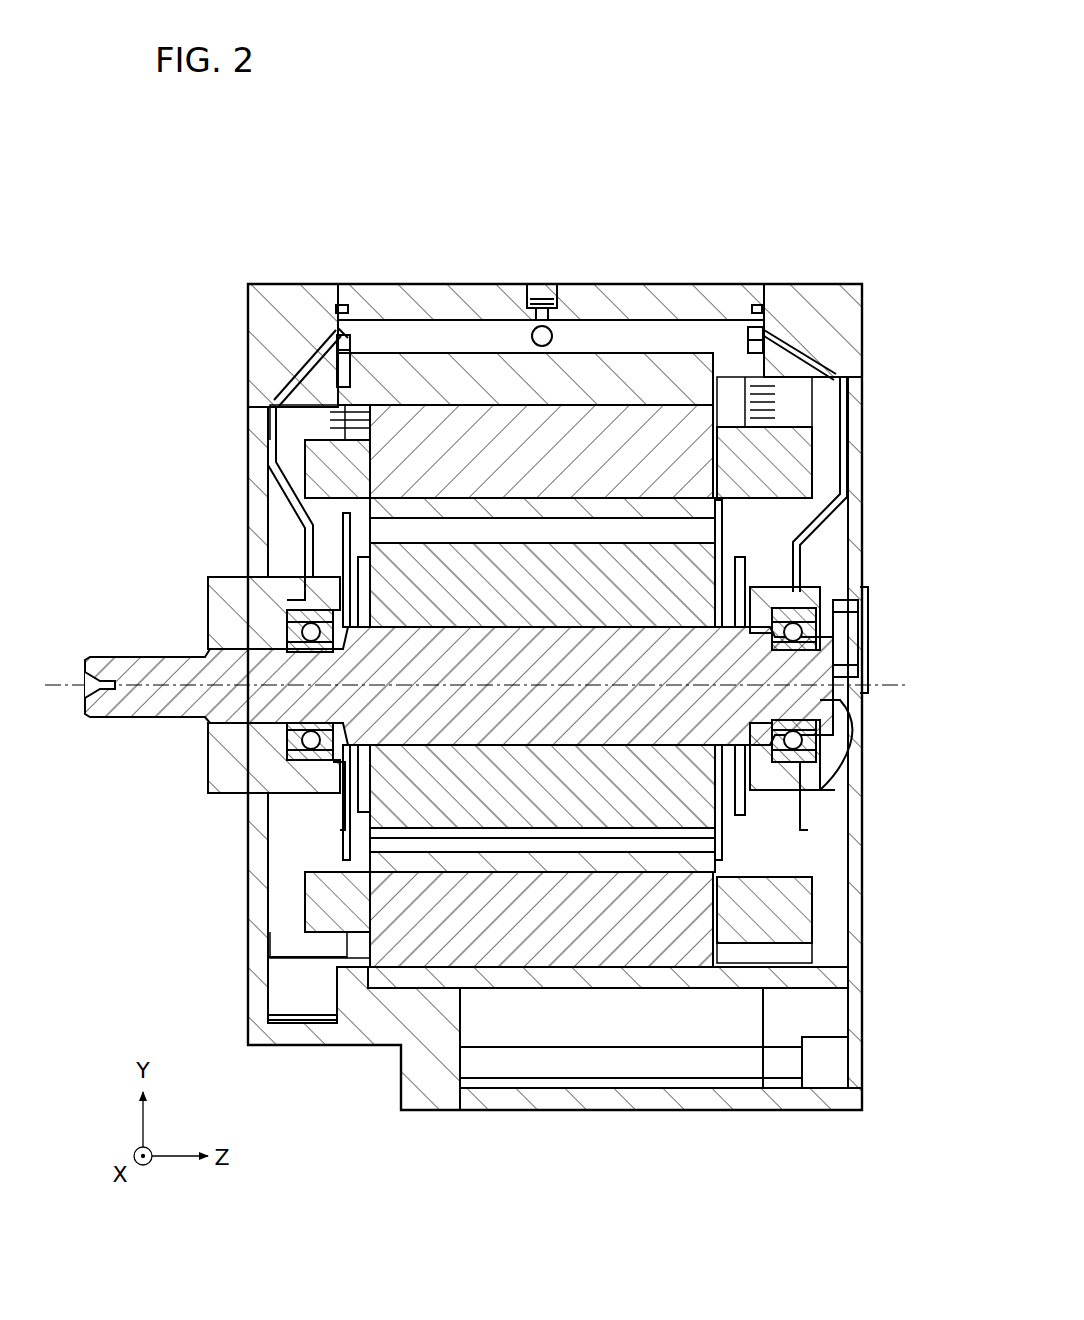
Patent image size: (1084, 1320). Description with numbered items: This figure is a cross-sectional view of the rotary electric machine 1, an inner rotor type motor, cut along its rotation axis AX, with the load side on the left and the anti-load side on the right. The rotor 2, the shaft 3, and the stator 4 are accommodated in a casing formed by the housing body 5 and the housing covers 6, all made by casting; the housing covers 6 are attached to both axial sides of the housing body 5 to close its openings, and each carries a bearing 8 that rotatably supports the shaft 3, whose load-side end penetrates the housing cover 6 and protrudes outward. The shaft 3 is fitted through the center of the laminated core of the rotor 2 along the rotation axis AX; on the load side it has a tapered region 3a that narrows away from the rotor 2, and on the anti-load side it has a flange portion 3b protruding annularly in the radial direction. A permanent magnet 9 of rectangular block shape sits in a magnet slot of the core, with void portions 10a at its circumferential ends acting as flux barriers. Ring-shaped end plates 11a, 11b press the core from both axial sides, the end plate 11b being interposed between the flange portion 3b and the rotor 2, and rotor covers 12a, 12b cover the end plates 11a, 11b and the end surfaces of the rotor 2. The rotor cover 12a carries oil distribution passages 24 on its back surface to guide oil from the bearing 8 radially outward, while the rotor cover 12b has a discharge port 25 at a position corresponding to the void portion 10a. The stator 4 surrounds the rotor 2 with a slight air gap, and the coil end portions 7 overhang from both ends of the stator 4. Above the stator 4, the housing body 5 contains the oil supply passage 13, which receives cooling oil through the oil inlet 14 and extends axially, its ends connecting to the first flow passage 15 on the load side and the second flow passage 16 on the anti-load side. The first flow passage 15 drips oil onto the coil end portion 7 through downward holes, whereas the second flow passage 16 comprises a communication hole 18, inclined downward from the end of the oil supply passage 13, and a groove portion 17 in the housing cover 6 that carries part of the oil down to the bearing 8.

The rotary electric machine 1 is at (719, 127).
The rotor 2 is at (428, 495).
The shaft 3 is at (120, 719).
The tapered region 3a is at (332, 600).
The flange portion 3b is at (830, 790).
The stator 4 is at (622, 368).
The housing body 5 is at (660, 282).
The housing cover 6 is at (265, 282).
The coil end portion 7 is at (325, 428).
The bearing 8 is at (298, 757).
The permanent magnet 9 is at (455, 520).
The void portion 10a is at (528, 530).
The end plate 11a is at (348, 822).
The end plate 11b is at (818, 822).
The rotor cover 12a is at (335, 548).
The rotor cover 12b is at (838, 578).
The oil supply passage 13 is at (497, 325).
The oil inlet 14 is at (553, 336).
The first flow passage 15 is at (345, 322).
The second flow passage 16 is at (550, 450).
The groove portion 17 is at (275, 440).
The communication hole 18 is at (310, 373).
The oil distribution passage 24 is at (355, 565).
The discharge port 25 is at (745, 537).
The rotation axis AX is at (70, 684).